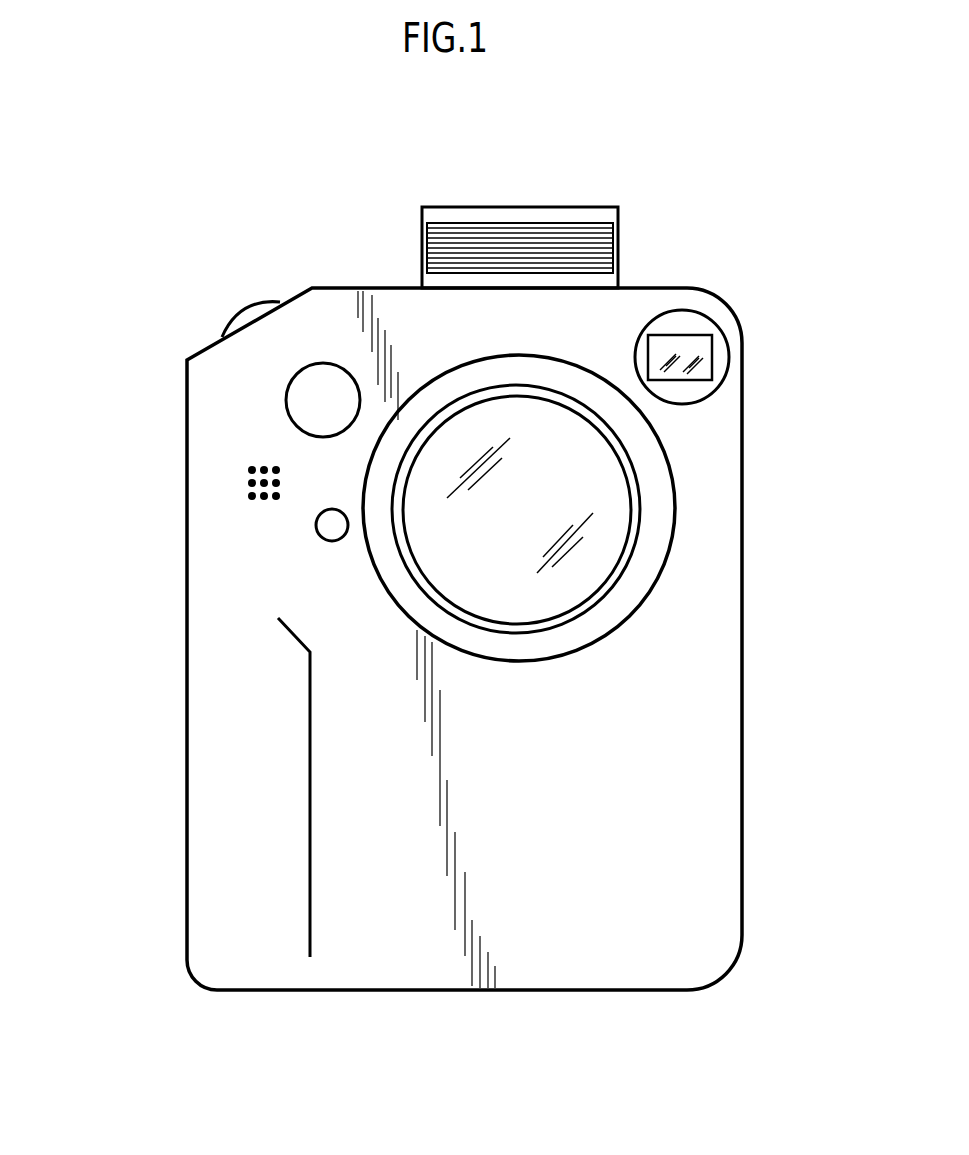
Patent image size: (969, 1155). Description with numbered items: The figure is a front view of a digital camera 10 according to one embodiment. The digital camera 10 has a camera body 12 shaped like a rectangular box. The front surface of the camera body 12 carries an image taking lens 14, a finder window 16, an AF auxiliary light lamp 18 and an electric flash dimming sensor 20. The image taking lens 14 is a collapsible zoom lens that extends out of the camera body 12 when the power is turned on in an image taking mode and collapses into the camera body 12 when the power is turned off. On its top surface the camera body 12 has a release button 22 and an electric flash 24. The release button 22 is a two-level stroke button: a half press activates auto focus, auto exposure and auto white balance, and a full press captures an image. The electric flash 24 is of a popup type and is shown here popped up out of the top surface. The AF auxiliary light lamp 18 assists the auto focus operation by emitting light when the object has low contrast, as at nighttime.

The digital camera 10 is at (148, 187).
The camera body 12 is at (500, 760).
The image taking lens 14 is at (533, 577).
The finder window 16 is at (688, 345).
The AF auxiliary light lamp 18 is at (323, 400).
The electric flash dimming sensor 20 is at (328, 530).
The release button 22 is at (242, 315).
The electric flash 24 is at (520, 245).